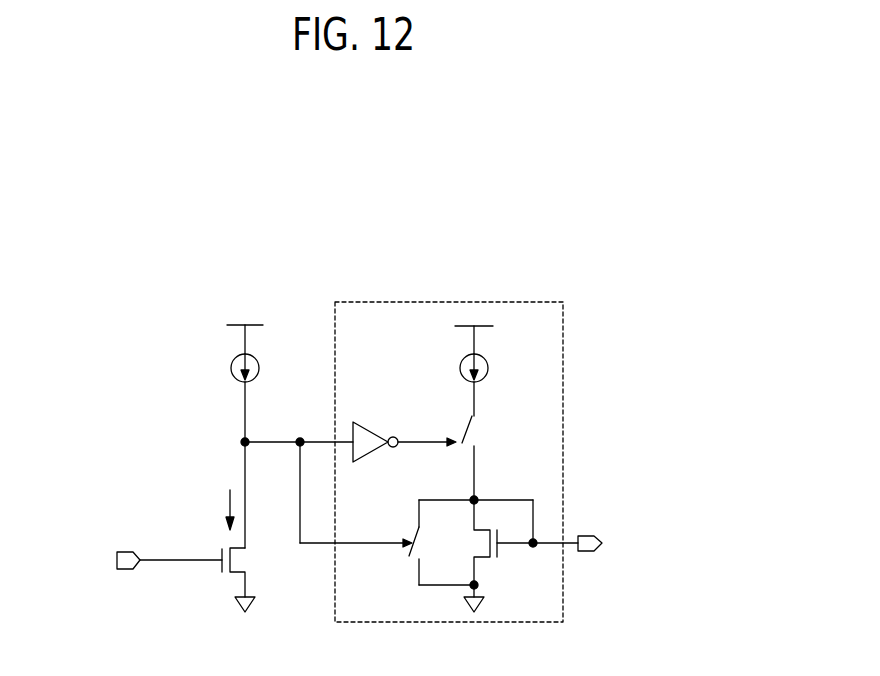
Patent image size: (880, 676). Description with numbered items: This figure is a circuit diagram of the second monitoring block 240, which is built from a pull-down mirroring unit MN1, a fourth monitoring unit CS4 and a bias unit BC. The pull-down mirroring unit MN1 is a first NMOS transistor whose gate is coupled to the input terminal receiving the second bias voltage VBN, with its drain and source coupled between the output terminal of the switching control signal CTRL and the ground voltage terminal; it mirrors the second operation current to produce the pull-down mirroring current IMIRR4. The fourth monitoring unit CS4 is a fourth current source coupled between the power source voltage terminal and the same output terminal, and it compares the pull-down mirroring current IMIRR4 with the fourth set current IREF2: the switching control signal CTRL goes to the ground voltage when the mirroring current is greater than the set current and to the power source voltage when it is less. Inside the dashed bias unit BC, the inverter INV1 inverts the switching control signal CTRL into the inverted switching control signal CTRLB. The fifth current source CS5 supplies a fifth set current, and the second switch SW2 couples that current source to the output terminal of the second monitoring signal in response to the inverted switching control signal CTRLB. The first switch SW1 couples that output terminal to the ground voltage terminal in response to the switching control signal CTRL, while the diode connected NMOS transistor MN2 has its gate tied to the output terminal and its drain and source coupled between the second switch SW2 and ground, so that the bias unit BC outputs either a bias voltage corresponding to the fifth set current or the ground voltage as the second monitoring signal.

The second monitoring block 240 is at (228, 248).
The bias unit BC is at (530, 302).
The fourth set current IREF2 is at (214, 349).
The fourth monitoring unit CS4 is at (260, 373).
The switching control signal CTRL is at (268, 412).
The pull-down mirroring current IMIRR4 is at (205, 495).
The pull-down mirroring unit MN1 is at (253, 580).
The second bias voltage VBN is at (148, 559).
The inverter INV1 is at (385, 450).
The inverted switching control signal CTRLB is at (425, 430).
The fifth current source CS5 is at (490, 374).
The second switch SW2 is at (491, 441).
The first switch SW1 is at (471, 540).
The diode connected NMOS transistor MN2 is at (498, 556).